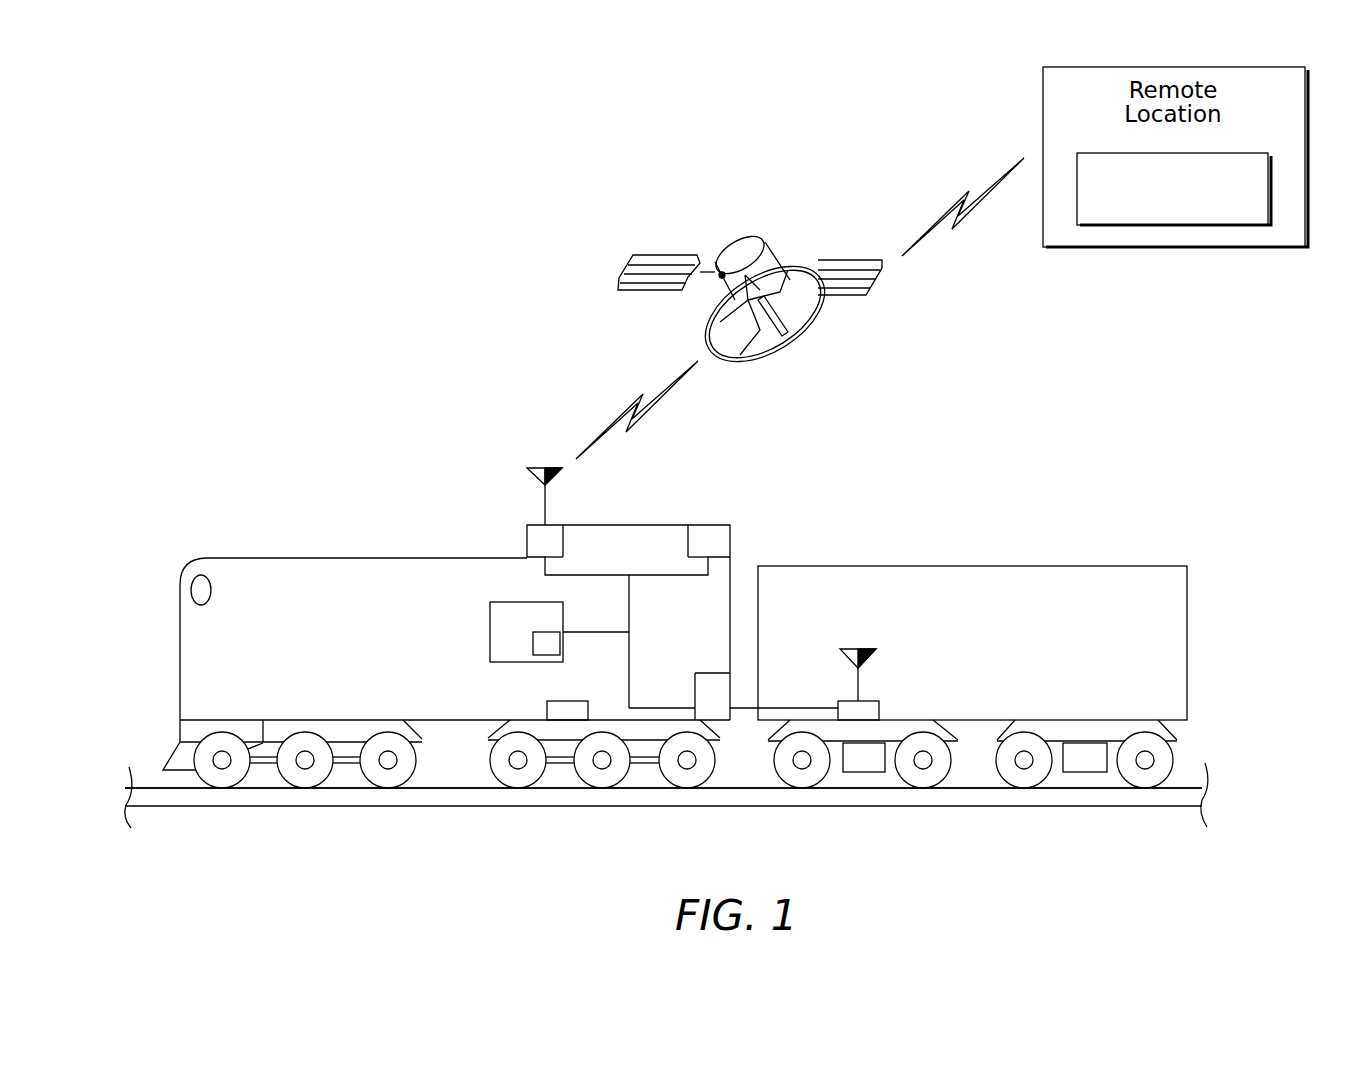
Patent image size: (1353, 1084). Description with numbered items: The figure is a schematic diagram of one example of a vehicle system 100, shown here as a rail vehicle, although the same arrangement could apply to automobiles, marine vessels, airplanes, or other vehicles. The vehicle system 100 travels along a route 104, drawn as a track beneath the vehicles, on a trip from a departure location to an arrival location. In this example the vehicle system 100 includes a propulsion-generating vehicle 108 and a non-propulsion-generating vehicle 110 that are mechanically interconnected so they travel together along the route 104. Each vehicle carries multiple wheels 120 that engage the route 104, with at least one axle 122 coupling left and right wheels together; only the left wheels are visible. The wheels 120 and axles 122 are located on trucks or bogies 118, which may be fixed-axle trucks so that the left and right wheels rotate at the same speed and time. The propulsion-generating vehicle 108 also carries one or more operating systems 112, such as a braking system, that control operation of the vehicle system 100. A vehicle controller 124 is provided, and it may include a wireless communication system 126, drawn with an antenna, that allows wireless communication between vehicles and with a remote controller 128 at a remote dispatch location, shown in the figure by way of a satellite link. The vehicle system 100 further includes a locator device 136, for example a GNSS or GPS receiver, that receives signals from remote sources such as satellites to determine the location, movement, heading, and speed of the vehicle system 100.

The vehicle system 100 is at (390, 522).
The route 104 is at (163, 818).
The propulsion-generating vehicle 108 is at (331, 558).
The non-propulsion-generating vehicle 110 is at (1083, 657).
The operating systems 112 is at (537, 705).
The trucks or bogies 118 is at (645, 730).
The wheels 120 is at (530, 783).
The axle 122 is at (518, 768).
The vehicle controller 124 is at (490, 612).
The wireless communication system 126 is at (567, 507).
The remote controller 128 is at (1242, 152).
The locator device 136 is at (533, 640).